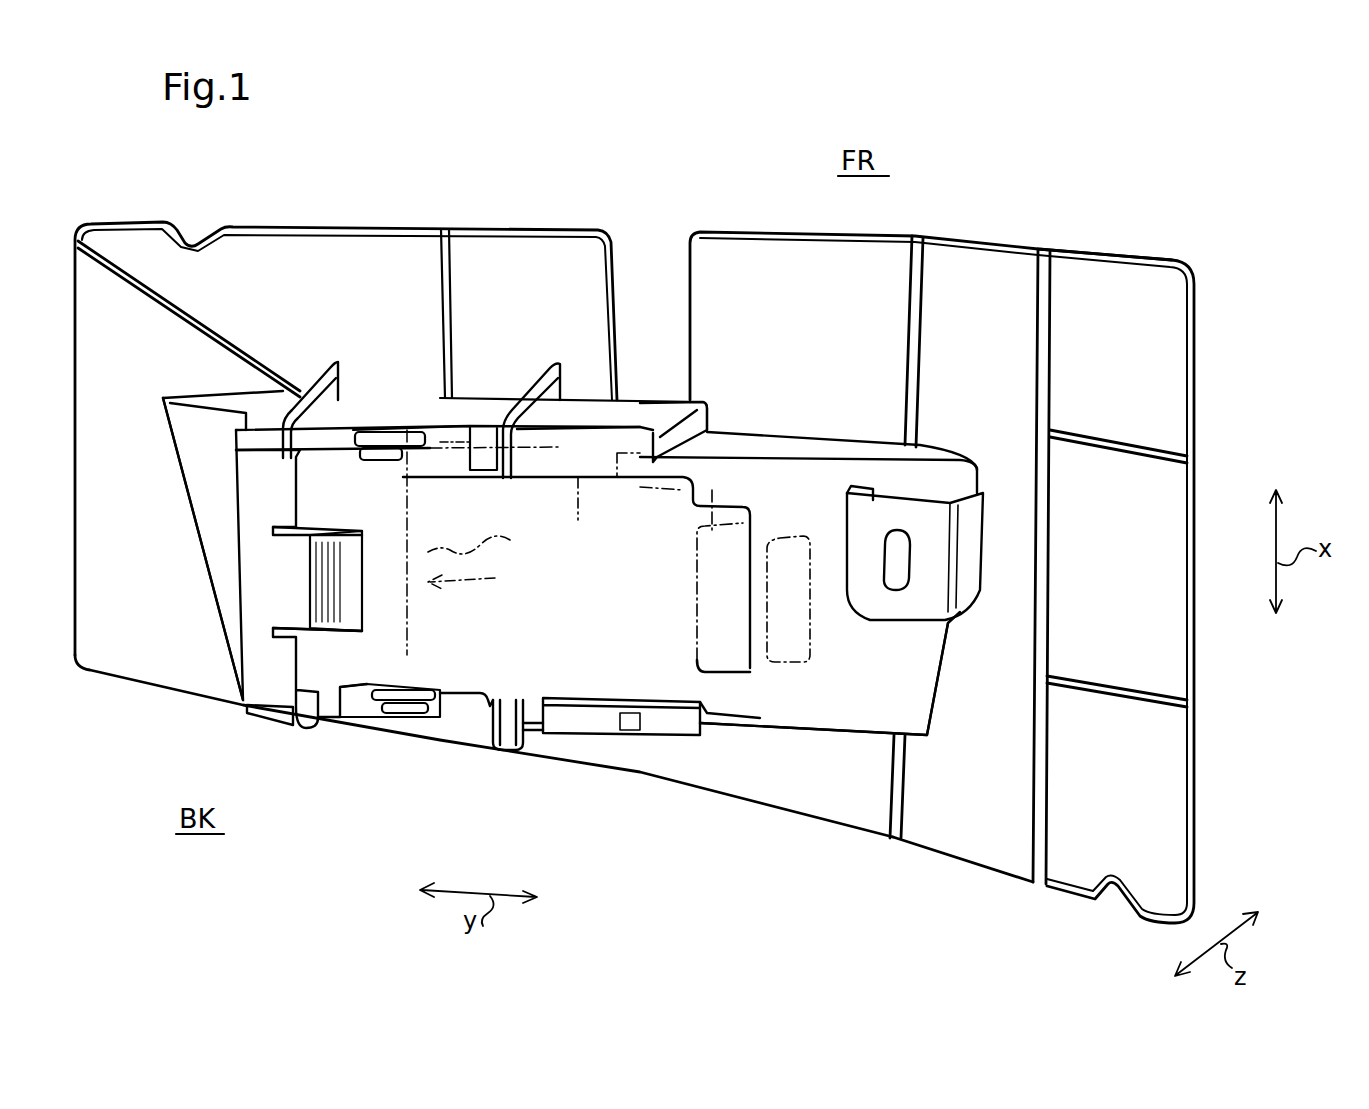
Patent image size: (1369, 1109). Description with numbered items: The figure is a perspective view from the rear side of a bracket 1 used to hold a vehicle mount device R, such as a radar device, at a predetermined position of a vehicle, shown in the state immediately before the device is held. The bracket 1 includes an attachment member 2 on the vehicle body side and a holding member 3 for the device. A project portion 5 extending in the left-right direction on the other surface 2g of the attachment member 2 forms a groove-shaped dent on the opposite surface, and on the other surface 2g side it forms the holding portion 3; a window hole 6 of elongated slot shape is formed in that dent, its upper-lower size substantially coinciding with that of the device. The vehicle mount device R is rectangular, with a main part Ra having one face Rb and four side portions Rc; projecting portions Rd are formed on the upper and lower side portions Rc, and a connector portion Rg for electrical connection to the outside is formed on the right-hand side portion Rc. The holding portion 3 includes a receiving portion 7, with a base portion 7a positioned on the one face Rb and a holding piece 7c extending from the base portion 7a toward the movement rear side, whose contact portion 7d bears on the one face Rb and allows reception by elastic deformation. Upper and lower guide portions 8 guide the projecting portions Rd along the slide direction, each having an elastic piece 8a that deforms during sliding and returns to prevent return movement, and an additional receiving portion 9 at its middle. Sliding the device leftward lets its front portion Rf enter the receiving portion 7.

The bracket 1 is at (1116, 240).
The attachment member 2 is at (1148, 380).
The other surface 2g is at (1163, 618).
The holding member 3 is at (605, 512).
The project portion 5 is at (352, 718).
The window hole 6 is at (653, 627).
The receiving portion 7 is at (258, 607).
The base portion 7a is at (203, 549).
The holding piece 7c is at (343, 578).
The contact portion 7d is at (347, 548).
The guide portion 8 is at (460, 432).
The elastic piece 8a is at (378, 432).
The additional receiving portion 9 is at (490, 440).
The vehicle mount device R is at (598, 692).
The main part Ra is at (824, 679).
The one face Rb is at (617, 684).
The side portion Rc is at (578, 478).
The projecting portion Rd is at (433, 437).
The front portion Rf is at (485, 535).
The connector portion Rg is at (812, 645).